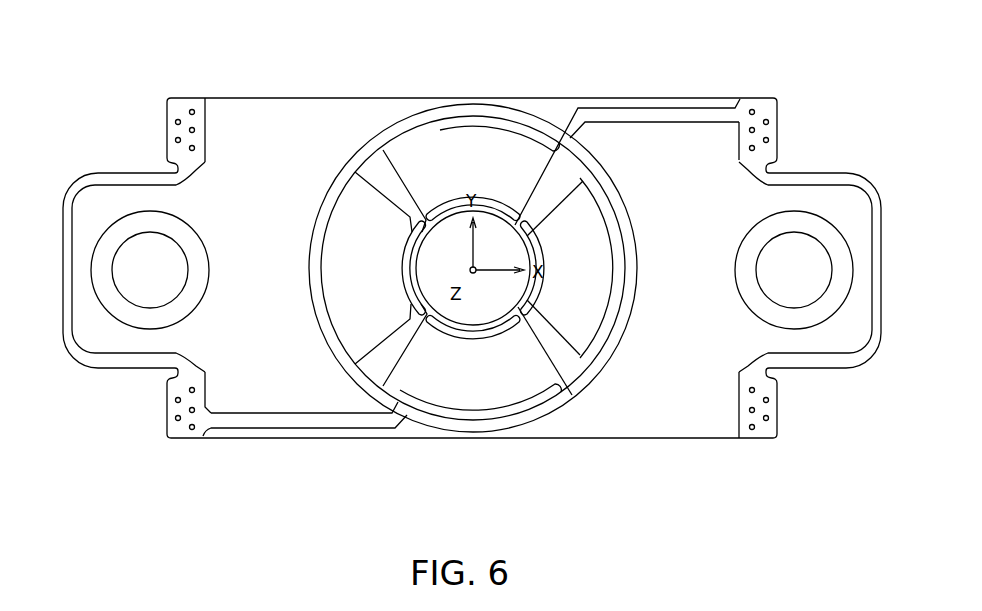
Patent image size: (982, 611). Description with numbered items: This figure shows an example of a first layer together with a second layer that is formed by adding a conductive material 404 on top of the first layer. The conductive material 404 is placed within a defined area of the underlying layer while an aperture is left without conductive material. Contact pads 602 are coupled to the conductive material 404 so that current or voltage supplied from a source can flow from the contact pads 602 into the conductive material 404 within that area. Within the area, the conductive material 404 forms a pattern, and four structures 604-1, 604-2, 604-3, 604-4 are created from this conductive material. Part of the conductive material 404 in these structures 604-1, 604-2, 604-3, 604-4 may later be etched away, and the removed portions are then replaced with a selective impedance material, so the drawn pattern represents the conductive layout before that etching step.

The conductive material 404 is at (498, 107).
The contact pads 602 is at (174, 97).
The structure 604-1 is at (447, 143).
The structure 604-2 is at (597, 228).
The structure 604-3 is at (474, 395).
The structure 604-4 is at (356, 230).